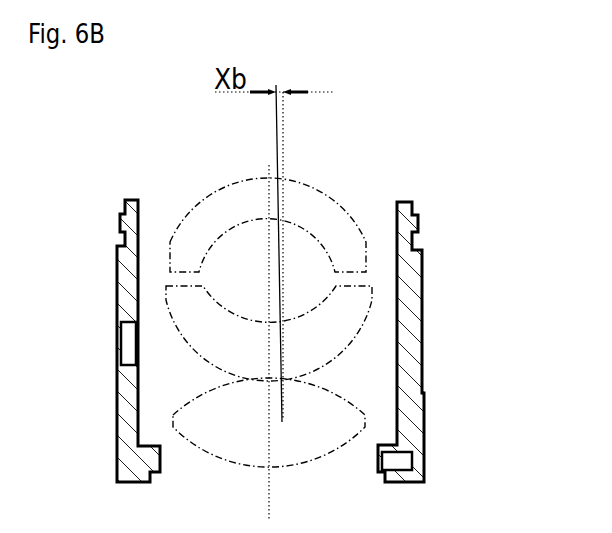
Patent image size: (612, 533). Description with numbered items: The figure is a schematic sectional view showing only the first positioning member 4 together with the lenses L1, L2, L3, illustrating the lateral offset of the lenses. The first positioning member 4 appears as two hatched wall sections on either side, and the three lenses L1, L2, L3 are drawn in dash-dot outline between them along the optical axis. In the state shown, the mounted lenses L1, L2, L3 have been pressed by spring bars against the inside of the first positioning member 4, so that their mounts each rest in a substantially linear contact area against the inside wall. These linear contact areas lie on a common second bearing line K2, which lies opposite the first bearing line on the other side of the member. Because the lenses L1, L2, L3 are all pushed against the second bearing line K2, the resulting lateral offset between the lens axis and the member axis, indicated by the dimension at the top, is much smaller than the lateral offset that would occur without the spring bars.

The first positioning member 4 is at (411, 283).
The second bearing line K2 is at (410, 378).
The lens L1 is at (363, 262).
The lens L2 is at (372, 297).
The lens L3 is at (365, 420).